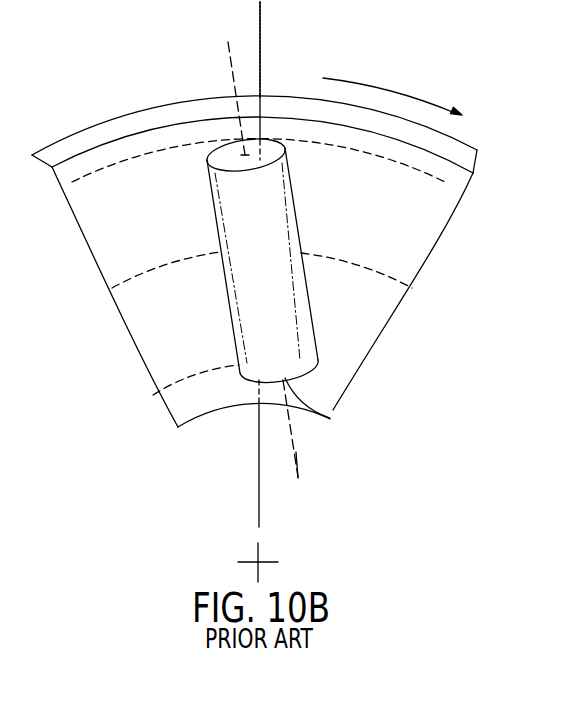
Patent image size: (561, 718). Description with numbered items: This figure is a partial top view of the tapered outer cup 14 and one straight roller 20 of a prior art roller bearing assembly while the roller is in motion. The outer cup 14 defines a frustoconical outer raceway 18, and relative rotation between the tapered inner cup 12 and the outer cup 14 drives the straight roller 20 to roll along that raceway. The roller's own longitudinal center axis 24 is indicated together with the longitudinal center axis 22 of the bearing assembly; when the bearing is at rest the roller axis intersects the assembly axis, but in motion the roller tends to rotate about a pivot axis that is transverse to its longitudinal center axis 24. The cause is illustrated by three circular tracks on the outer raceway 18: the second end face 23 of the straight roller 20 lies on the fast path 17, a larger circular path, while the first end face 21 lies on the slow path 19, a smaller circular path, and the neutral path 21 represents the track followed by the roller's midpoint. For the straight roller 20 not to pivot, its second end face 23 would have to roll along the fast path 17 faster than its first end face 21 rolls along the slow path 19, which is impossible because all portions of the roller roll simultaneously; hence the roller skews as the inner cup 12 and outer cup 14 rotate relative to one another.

The tapered inner cup 12 is at (228, 42).
The tapered outer cup 14 is at (84, 96).
The fast path 17 is at (447, 183).
The outer raceway 18 is at (111, 229).
The slow path 19 is at (302, 371).
The straight roller 20 is at (312, 214).
The neutral path 21 is at (394, 278).
The longitudinal center axis of the bearing assembly 22 is at (276, 574).
The second end face 23 is at (205, 167).
The longitudinal center axis of the straight roller 24 is at (297, 456).